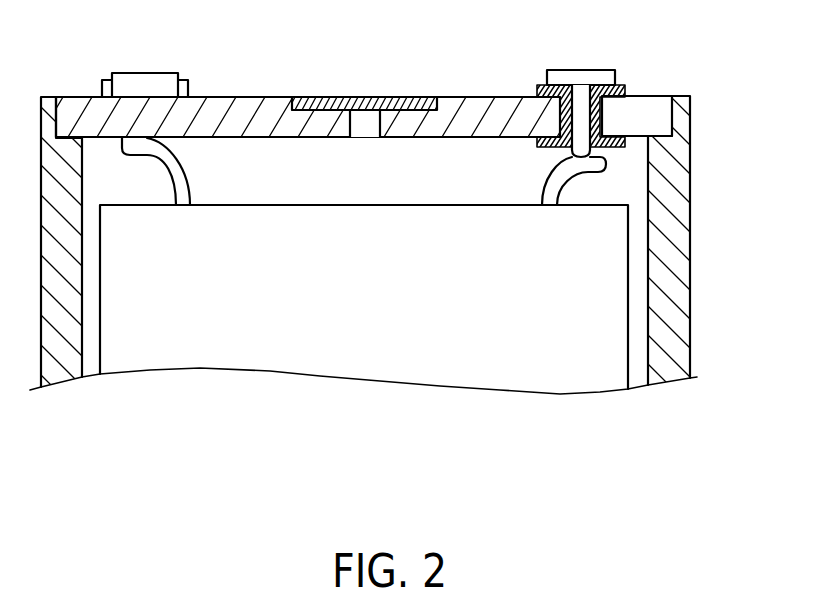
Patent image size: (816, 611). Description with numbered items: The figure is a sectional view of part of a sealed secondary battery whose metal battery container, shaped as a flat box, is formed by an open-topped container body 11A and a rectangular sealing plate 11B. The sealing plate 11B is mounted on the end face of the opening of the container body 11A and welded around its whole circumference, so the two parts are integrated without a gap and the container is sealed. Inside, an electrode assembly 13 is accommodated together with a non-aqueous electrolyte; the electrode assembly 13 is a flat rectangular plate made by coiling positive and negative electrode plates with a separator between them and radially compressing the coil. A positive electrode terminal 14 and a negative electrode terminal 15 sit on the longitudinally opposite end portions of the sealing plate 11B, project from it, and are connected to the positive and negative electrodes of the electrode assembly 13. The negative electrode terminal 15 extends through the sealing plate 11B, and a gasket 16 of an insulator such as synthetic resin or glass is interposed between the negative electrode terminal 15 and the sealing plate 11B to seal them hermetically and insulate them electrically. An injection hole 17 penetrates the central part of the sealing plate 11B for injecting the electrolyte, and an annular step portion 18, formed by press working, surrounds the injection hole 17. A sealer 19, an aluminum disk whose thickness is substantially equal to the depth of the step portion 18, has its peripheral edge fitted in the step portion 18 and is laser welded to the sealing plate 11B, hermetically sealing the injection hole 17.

The container body 11A is at (690, 281).
The sealing plate 11B is at (488, 103).
The electrode assembly 13 is at (534, 380).
The positive electrode terminal 14 is at (145, 73).
The negative electrode terminal 15 is at (581, 69).
The gasket 16 is at (626, 90).
The injection hole 17 is at (369, 131).
The step portion 18 is at (308, 115).
The sealer 19 is at (368, 96).